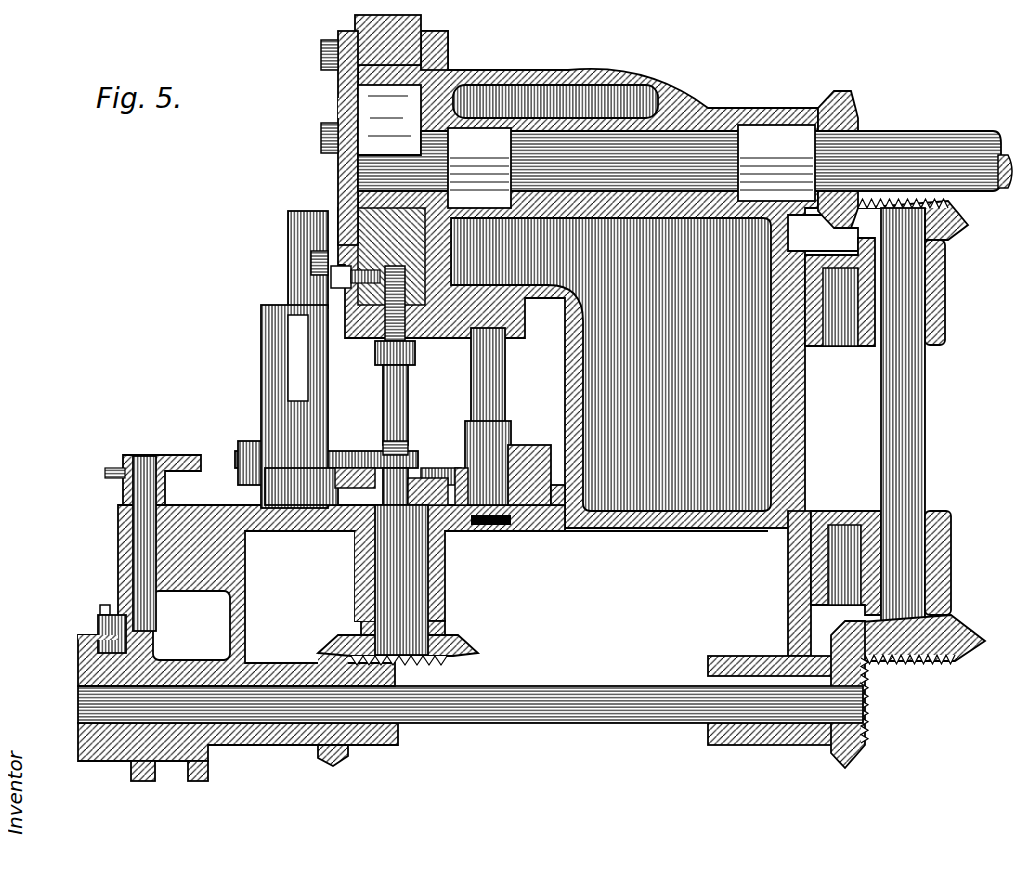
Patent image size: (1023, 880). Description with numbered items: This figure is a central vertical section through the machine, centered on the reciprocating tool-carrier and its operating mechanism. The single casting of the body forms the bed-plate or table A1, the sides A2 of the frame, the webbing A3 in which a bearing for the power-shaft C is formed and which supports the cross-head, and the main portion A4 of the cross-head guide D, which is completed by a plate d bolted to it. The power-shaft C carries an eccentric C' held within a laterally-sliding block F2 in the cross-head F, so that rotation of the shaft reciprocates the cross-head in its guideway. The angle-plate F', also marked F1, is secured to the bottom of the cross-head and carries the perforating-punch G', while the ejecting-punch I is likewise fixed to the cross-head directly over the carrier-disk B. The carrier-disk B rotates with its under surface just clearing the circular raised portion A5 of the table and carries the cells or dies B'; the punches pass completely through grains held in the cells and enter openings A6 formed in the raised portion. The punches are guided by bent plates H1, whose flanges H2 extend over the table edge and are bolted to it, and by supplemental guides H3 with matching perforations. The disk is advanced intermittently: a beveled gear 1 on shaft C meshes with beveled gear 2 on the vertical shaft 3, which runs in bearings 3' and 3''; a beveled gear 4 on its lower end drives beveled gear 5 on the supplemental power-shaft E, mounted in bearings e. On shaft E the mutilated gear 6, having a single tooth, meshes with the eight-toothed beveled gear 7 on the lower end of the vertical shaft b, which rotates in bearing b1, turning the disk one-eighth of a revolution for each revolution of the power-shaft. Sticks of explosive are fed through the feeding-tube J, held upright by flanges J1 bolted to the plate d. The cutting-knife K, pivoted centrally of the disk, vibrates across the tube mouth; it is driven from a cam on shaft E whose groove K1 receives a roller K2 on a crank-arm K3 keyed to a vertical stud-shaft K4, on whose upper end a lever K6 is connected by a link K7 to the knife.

The cross-head guide D is at (430, 22).
The angle-plate F' is at (451, 50).
The main portion of the cross-head guide A4 is at (588, 81).
The webbing A3 is at (808, 386).
The reciprocating cross-head F is at (336, 138).
The laterally-sliding block F2 is at (313, 62).
The plate d is at (328, 100).
The eccentric C' is at (389, 120).
The power-shaft C is at (685, 154).
The beveled gear 1 is at (850, 105).
The beveled gear 2 is at (960, 207).
The bearing 3' is at (951, 292).
The vertical shaft 3 is at (915, 433).
The bearing 3'' is at (953, 563).
The beveled gear 4 is at (957, 645).
The beveled gear 5 is at (860, 745).
The bearings e is at (735, 648).
The supplemental power-shaft E is at (470, 716).
The circular raised portion A5 is at (245, 508).
The cutting-knife K is at (357, 445).
The lever K6 is at (180, 447).
The vertical stud-shaft K4 is at (125, 525).
The link K7 is at (230, 455).
The crank-arm K3 is at (97, 597).
The roller K2 is at (90, 618).
The cam-groove K1 is at (72, 630).
The flanges J1 is at (287, 210).
The feeding-tube J is at (253, 311).
The angle-plate F1 is at (405, 333).
The ejecting-punch I is at (375, 383).
The carrier-disk B is at (363, 496).
The perforating-punch G' is at (504, 396).
The cells or dies B' is at (475, 455).
The supplemental guides H3 is at (510, 437).
The bent plates H1 is at (548, 477).
The bed-plate or table A1 is at (480, 520).
The openings A6 is at (513, 523).
The flanges H2 is at (560, 523).
The sides of the machine-frame A2 is at (688, 544).
The beveled gear 7 is at (465, 640).
The bearing b1 is at (347, 585).
The vertical shaft b is at (420, 594).
The mutilated gear 6 is at (335, 748).